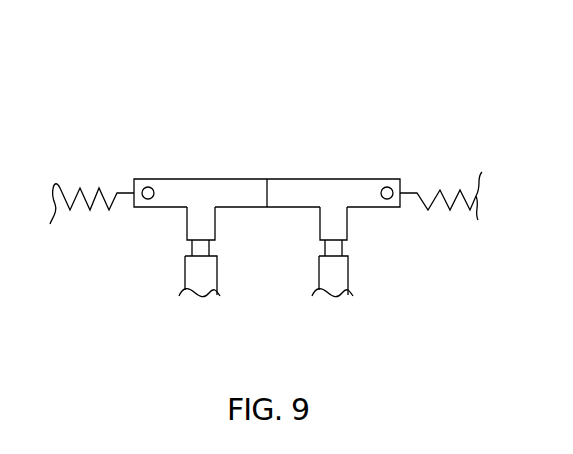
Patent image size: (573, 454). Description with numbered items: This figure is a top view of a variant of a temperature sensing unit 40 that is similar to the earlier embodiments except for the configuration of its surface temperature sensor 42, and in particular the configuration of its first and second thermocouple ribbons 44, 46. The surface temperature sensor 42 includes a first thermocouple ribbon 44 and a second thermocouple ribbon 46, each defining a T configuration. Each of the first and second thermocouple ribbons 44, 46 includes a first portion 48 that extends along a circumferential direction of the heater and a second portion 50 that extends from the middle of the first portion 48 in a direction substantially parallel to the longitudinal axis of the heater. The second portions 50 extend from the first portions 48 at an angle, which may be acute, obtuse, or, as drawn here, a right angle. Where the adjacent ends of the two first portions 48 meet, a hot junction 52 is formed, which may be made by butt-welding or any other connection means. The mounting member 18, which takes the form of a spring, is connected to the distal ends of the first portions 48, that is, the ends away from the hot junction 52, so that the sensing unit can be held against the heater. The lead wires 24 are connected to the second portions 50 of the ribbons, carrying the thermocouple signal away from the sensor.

The temperature sensing unit 40 is at (431, 55).
The surface temperature sensor 42 is at (255, 145).
The first thermocouple ribbon 44 is at (205, 162).
The second thermocouple ribbon 46 is at (332, 165).
The first portion 48 is at (173, 188).
The second portion 50 is at (187, 223).
The hot junction 52 is at (271, 192).
The lead wires 24 is at (187, 275).
The mounting member 18 is at (80, 210).